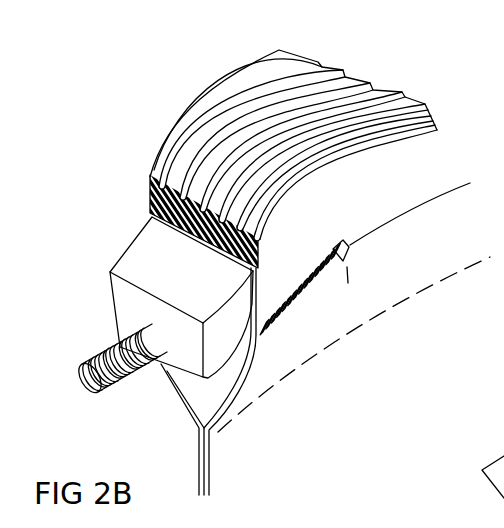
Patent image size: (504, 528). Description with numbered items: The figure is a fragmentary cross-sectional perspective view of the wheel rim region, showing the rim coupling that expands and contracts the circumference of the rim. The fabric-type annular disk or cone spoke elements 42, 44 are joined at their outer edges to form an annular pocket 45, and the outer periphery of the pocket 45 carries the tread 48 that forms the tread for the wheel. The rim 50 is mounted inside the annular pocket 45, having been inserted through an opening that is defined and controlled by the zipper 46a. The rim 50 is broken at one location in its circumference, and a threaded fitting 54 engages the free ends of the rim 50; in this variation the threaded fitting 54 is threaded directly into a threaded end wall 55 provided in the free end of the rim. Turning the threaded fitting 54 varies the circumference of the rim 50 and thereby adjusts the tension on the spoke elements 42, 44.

The tread 48 is at (224, 103).
The rim 50 is at (142, 256).
The threaded end wall 55 is at (122, 304).
The threaded fitting 54 is at (126, 376).
The fabric spoke element 44 is at (198, 426).
The zipper 46a is at (303, 296).
The annular pocket 45 is at (462, 238).
The fabric spoke element 42 is at (282, 465).